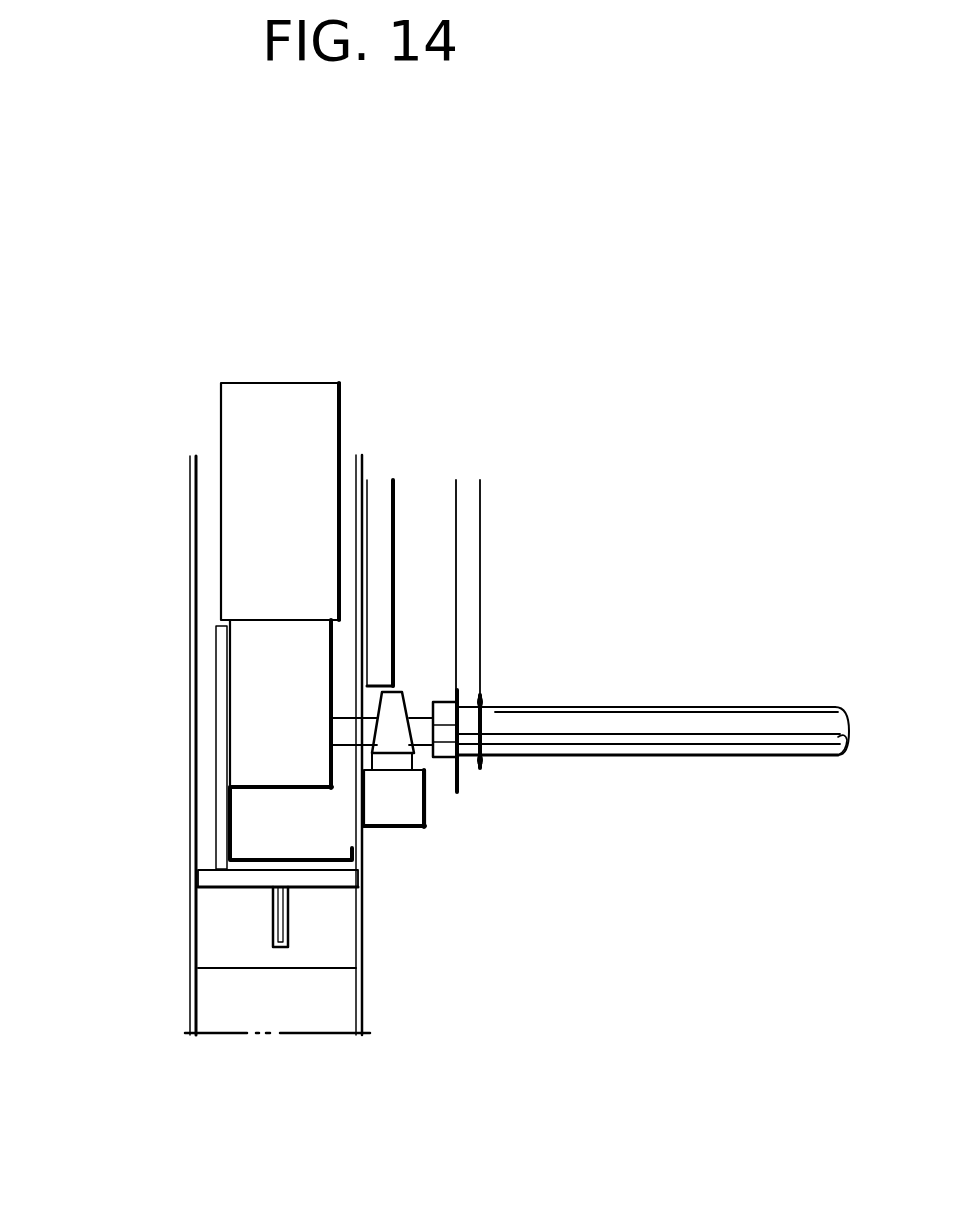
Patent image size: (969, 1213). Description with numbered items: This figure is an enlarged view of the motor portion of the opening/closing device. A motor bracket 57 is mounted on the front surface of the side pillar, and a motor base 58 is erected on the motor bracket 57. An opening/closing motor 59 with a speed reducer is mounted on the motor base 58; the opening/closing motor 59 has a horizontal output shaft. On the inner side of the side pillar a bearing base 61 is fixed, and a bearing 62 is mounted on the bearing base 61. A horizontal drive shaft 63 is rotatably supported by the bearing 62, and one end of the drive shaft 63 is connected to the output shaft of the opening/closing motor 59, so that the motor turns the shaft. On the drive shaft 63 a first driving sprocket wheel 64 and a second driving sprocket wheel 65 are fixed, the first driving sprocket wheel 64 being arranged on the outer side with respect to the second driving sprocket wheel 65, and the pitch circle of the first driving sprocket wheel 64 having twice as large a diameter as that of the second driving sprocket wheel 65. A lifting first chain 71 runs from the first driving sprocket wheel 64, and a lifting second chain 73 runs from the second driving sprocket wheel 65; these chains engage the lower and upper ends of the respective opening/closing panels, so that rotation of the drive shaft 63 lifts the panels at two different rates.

The motor bracket 57 is at (332, 888).
The motor base 58 is at (222, 827).
The opening/closing motor 59 is at (220, 547).
The bearing base 61 is at (410, 805).
The bearing 62 is at (395, 702).
The drive shaft 63 is at (702, 708).
The first driving sprocket wheel 64 is at (462, 782).
The second driving sprocket wheel 65 is at (482, 708).
The lifting first chain 71 is at (456, 513).
The lifting second chain 73 is at (480, 535).